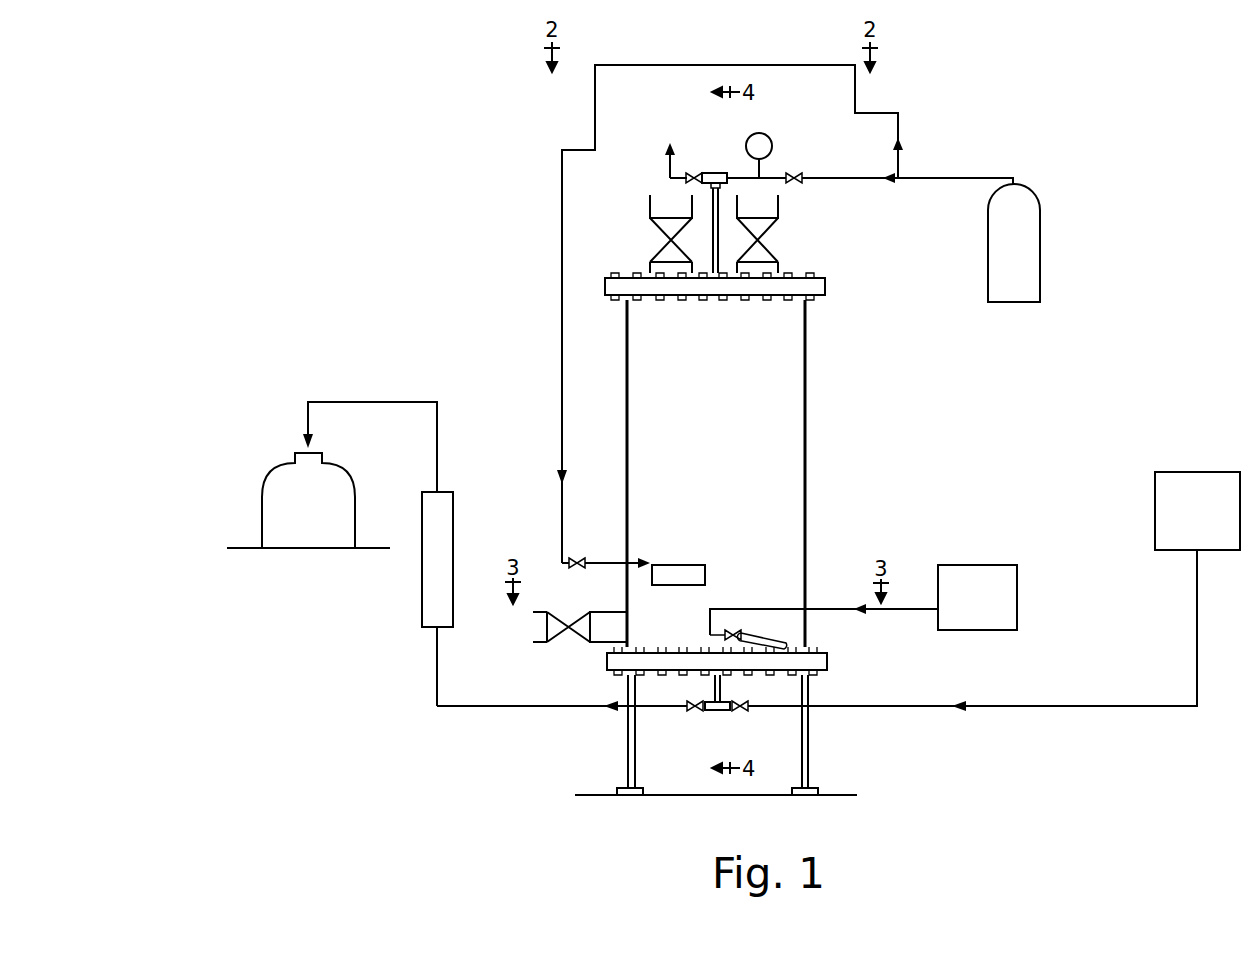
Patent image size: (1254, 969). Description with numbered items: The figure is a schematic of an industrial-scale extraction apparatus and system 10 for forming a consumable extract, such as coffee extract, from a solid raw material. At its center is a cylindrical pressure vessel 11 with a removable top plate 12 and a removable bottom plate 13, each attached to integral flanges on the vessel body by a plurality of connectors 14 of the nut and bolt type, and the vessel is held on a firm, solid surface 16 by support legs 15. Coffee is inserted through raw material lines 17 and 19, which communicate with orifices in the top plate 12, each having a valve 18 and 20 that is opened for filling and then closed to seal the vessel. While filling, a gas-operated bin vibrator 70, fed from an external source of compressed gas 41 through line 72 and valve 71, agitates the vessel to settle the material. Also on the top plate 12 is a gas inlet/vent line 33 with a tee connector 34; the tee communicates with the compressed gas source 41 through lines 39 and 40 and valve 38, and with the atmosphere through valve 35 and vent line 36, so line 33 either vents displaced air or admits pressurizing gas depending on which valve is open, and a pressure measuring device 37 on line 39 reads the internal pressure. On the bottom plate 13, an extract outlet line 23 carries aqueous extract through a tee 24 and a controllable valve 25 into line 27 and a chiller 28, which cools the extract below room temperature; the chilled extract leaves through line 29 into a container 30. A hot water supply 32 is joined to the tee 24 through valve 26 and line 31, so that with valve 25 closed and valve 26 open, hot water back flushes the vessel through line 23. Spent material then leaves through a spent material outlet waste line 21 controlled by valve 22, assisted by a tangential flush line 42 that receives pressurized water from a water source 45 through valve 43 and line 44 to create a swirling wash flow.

The extraction apparatus and system 10 is at (385, 204).
The cylindrical pressure vessel 11 is at (805, 378).
The top plate 12 is at (825, 290).
The bottom plate 13 is at (827, 663).
The connectors 14 is at (820, 276).
The support legs 15 is at (635, 770).
The solid surface 16 is at (835, 797).
The raw material line 17 is at (650, 264).
The valve 18 is at (650, 222).
The raw material line 19 is at (778, 265).
The valve 20 is at (778, 222).
The spent material outlet waste line 21 is at (600, 642).
The valve 22 is at (562, 643).
The extract outlet line 23 is at (714, 688).
The tee 24 is at (717, 712).
The controllable valve 25 is at (697, 712).
The valve 26 is at (745, 703).
The line 27 is at (570, 708).
The chiller 28 is at (453, 507).
The line 29 is at (437, 410).
The container 30 is at (355, 485).
The line 31 is at (1020, 705).
The hot water supply 32 is at (1197, 472).
The gas inlet/vent line 33 is at (712, 258).
The tee connector 34 is at (712, 173).
The valve 35 is at (692, 173).
The vent line 36 is at (670, 166).
The pressure measuring device 37 is at (772, 146).
The valve 38 is at (798, 172).
The line 39 is at (773, 183).
The line 40 is at (938, 178).
The external source of compressed gas 41 is at (1040, 217).
The tangential flush line 42 is at (764, 636).
The valve 43 is at (722, 636).
The line 44 is at (900, 608).
The source of pressurized water 45 is at (1000, 565).
The gas-operated bin vibrator 70 is at (680, 565).
The valve 71 is at (582, 560).
The line 72 is at (562, 398).